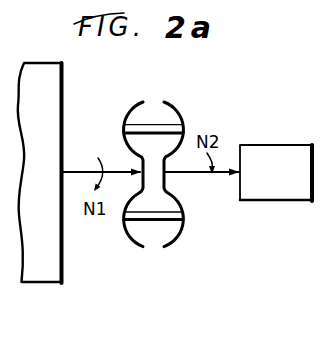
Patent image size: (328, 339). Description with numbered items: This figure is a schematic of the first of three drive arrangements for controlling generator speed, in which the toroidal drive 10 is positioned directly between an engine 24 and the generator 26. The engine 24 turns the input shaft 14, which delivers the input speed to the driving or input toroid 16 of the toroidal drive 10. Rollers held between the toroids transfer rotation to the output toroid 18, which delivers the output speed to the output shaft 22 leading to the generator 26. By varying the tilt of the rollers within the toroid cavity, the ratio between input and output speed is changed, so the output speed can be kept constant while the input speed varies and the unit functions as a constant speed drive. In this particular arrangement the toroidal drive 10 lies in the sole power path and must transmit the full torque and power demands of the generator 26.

The toroidal drive 10 is at (210, 122).
The input shaft 14 is at (78, 171).
The input toroid 16 is at (129, 110).
The output toroid 18 is at (175, 107).
The output shaft 22 is at (212, 172).
The engine 24 is at (40, 283).
The generator 26 is at (279, 201).